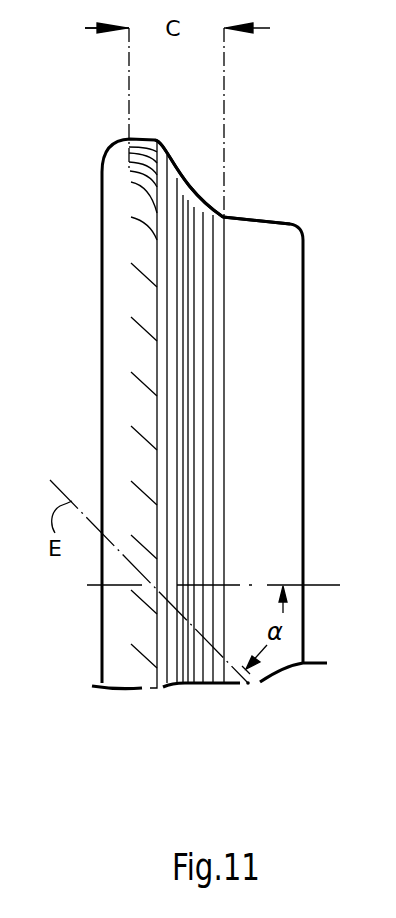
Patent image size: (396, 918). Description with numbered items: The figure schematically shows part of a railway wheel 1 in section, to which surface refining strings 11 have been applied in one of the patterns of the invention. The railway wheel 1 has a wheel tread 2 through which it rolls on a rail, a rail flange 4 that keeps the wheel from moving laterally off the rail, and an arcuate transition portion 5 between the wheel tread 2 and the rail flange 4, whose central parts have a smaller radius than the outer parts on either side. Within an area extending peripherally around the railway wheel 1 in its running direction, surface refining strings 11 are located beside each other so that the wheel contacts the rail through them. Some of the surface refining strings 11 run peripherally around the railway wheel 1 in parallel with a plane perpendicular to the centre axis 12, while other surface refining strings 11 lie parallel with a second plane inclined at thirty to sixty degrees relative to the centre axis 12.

The railway wheel 1 is at (278, 470).
The wheel tread 2 is at (233, 216).
The rail flange 4 is at (170, 167).
The transition portion 5 is at (190, 198).
The surface refining strings 11 is at (150, 281).
The centre axis 12 is at (318, 585).